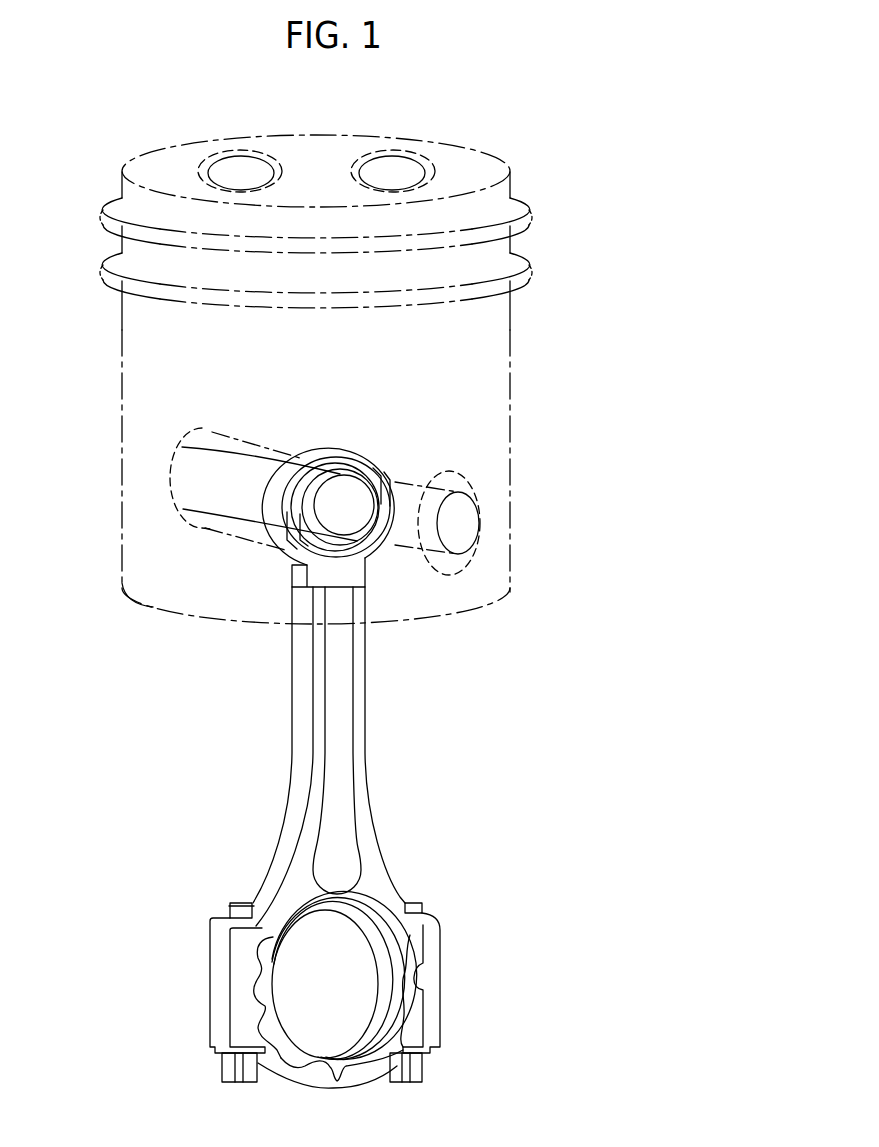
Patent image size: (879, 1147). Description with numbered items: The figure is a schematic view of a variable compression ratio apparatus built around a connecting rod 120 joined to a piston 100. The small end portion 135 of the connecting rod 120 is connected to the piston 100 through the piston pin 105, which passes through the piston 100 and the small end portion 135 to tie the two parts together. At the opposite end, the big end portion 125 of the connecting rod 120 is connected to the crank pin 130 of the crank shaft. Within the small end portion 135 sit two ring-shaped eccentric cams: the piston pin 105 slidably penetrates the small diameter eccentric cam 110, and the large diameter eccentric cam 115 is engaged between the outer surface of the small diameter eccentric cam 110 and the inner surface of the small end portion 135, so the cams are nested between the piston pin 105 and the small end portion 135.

The piston 100 is at (510, 363).
The piston pin 105 is at (480, 522).
The small diameter eccentric cam 110 is at (303, 498).
The large diameter eccentric cam 115 is at (297, 563).
The connecting rod 120 is at (333, 788).
The big end portion 125 is at (393, 898).
The crank pin 130 is at (312, 978).
The small end portion 135 is at (283, 525).